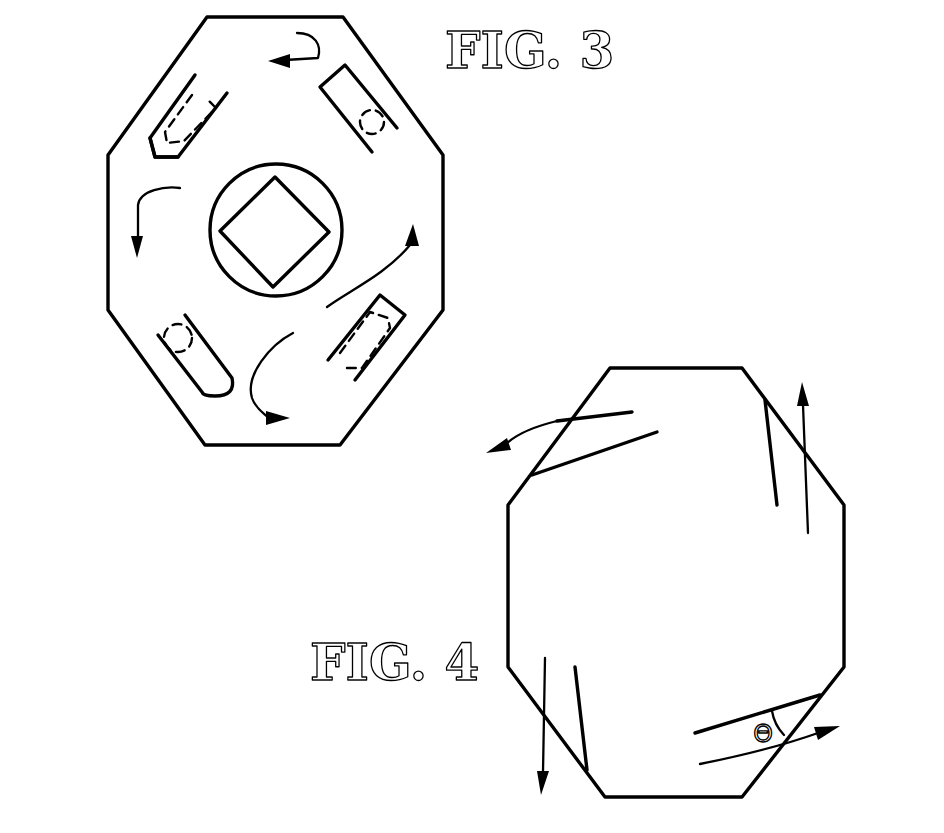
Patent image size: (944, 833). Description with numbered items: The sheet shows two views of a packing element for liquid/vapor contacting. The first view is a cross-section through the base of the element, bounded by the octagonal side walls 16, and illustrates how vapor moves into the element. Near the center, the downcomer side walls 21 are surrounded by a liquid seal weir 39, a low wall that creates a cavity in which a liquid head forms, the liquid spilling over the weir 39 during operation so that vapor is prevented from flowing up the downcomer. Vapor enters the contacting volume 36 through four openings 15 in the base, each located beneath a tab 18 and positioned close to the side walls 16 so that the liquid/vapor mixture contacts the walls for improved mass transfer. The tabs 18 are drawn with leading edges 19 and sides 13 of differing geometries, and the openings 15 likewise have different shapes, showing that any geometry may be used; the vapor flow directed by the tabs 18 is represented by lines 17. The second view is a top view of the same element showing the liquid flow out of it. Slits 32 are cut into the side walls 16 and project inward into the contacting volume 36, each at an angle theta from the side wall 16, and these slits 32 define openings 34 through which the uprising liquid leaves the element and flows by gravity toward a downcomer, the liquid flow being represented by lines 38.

In FIG. 3, the sides of the tabs 13 is at (183, 97).
In FIG. 3, the opening 15 is at (203, 90).
In FIG. 3, the side walls 16 is at (408, 103).
In FIG. 4, the side walls 16 is at (846, 558).
In FIG. 3, the vapor flow lines 17 is at (275, 223).
In FIG. 3, the tab 18 is at (331, 107).
In FIG. 3, the leading edge of the tabs 19 is at (153, 153).
In FIG. 3, the downcomer side walls 21 is at (248, 202).
In FIG. 4, the slits 32 is at (773, 482).
In FIG. 4, the opening in the side walls 34 is at (645, 396).
In FIG. 3, the contacting volume 36 is at (156, 262).
In FIG. 4, the contacting volume 36 is at (664, 604).
In FIG. 4, the liquid flow lines 38 is at (558, 420).
In FIG. 3, the liquid seal weir 39 is at (333, 195).